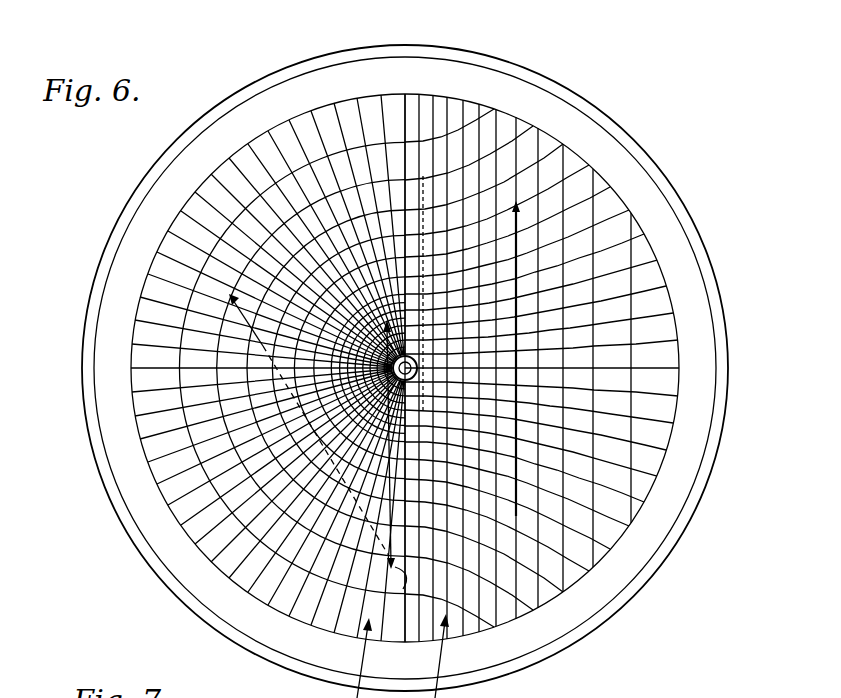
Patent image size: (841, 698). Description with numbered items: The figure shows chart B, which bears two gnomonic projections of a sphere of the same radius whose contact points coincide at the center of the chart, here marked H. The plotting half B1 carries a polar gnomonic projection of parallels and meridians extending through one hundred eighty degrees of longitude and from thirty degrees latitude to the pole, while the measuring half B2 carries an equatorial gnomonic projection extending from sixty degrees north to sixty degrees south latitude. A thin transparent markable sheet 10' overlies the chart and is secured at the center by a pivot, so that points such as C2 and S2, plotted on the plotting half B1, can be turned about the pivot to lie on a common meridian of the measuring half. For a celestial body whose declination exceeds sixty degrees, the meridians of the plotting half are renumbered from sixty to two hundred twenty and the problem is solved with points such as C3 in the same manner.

The chart B is at (663, 180).
The plotting half B1 is at (178, 222).
The measuring half B2 is at (658, 303).
The transparent sheet 10' is at (436, 368).
The central hub / pole H is at (414, 365).
The point C3 is at (404, 364).
The point C2 is at (461, 399).
The point S2 is at (317, 421).